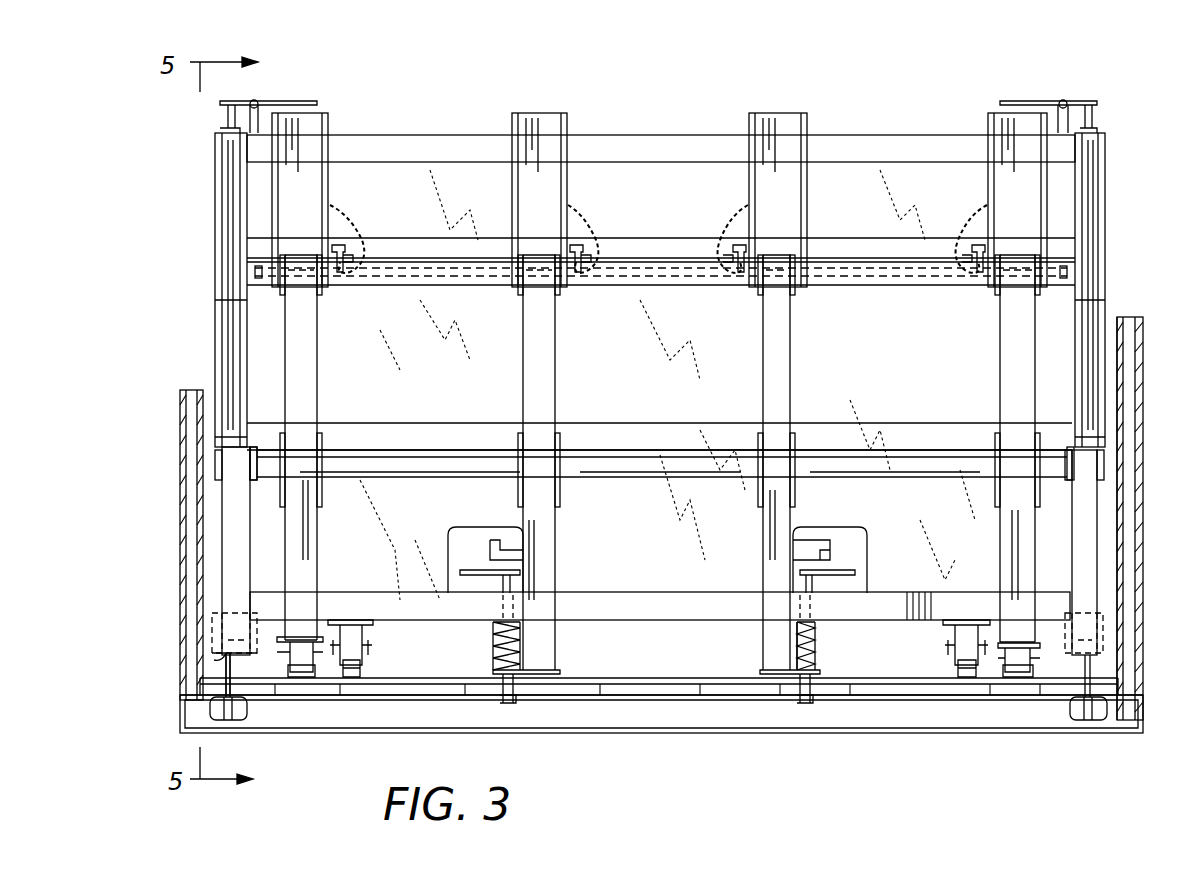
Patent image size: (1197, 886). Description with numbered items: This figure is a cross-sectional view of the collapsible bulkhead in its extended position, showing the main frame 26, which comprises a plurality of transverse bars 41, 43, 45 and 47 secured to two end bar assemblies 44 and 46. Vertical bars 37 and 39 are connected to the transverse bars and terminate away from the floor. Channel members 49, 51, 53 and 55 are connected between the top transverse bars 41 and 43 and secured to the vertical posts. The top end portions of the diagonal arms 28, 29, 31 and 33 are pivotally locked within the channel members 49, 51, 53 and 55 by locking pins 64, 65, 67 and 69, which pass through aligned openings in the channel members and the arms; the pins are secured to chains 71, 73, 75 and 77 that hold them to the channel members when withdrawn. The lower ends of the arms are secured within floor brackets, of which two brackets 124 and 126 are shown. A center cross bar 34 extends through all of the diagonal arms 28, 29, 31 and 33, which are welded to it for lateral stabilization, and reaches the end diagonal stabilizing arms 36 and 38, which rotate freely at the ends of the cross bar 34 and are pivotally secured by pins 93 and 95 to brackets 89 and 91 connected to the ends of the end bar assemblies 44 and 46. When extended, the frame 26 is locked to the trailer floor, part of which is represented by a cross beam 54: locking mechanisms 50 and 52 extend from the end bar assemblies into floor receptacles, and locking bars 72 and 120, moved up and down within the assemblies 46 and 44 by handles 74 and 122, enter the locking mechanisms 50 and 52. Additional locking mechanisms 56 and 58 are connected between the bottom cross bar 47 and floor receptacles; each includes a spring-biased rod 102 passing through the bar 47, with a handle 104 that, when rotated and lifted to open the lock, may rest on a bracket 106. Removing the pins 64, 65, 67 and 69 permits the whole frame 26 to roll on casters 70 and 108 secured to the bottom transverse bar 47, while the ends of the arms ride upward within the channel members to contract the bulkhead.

The frame 26 is at (710, 120).
The diagonal arm 28 is at (986, 391).
The diagonal arm 29 is at (801, 381).
The diagonal arm 31 is at (566, 381).
The diagonal arm 33 is at (329, 395).
The cross bar 34 is at (610, 478).
The end diagonal stabilizing arm 36 is at (1095, 565).
The vertical bar 37 is at (768, 565).
The end diagonal stabilizing arm 38 is at (232, 512).
The vertical bar 39 is at (548, 565).
The transverse bar 41 is at (470, 140).
The transverse bar 43 is at (608, 275).
The end bar assembly 44 is at (1083, 246).
The transverse bar 45 is at (638, 432).
The end bar assembly 46 is at (244, 255).
The transverse bar 47 is at (640, 598).
The channel member 49 is at (985, 150).
The locking mechanism 50 is at (268, 716).
The channel member 51 is at (808, 150).
The locking mechanism 52 is at (1082, 738).
The channel member 53 is at (568, 150).
The cross beam 54 is at (672, 726).
The channel member 55 is at (330, 192).
The locking mechanism 56 is at (485, 660).
The locking mechanism 58 is at (825, 662).
The locking pin 64 is at (1000, 298).
The locking pin 65 is at (788, 300).
The locking pin 67 is at (548, 315).
The locking pin 69 is at (302, 295).
The caster 70 is at (368, 668).
The chain 71 is at (968, 232).
The locking bar 72 is at (232, 362).
The chain 73 is at (735, 232).
The handle 74 is at (272, 94).
The chain 75 is at (588, 230).
The chain 77 is at (355, 232).
The bracket 89 is at (1100, 620).
The bracket 91 is at (212, 615).
The pin 93 is at (1105, 648).
The pin 95 is at (210, 658).
The rod 102 is at (815, 585).
The handle 104 is at (857, 551).
The bracket 106 is at (820, 530).
The caster 108 is at (940, 670).
The locking bar 120 is at (1115, 322).
The handle 122 is at (1082, 82).
The bracket 124 is at (330, 645).
The bracket 126 is at (990, 640).